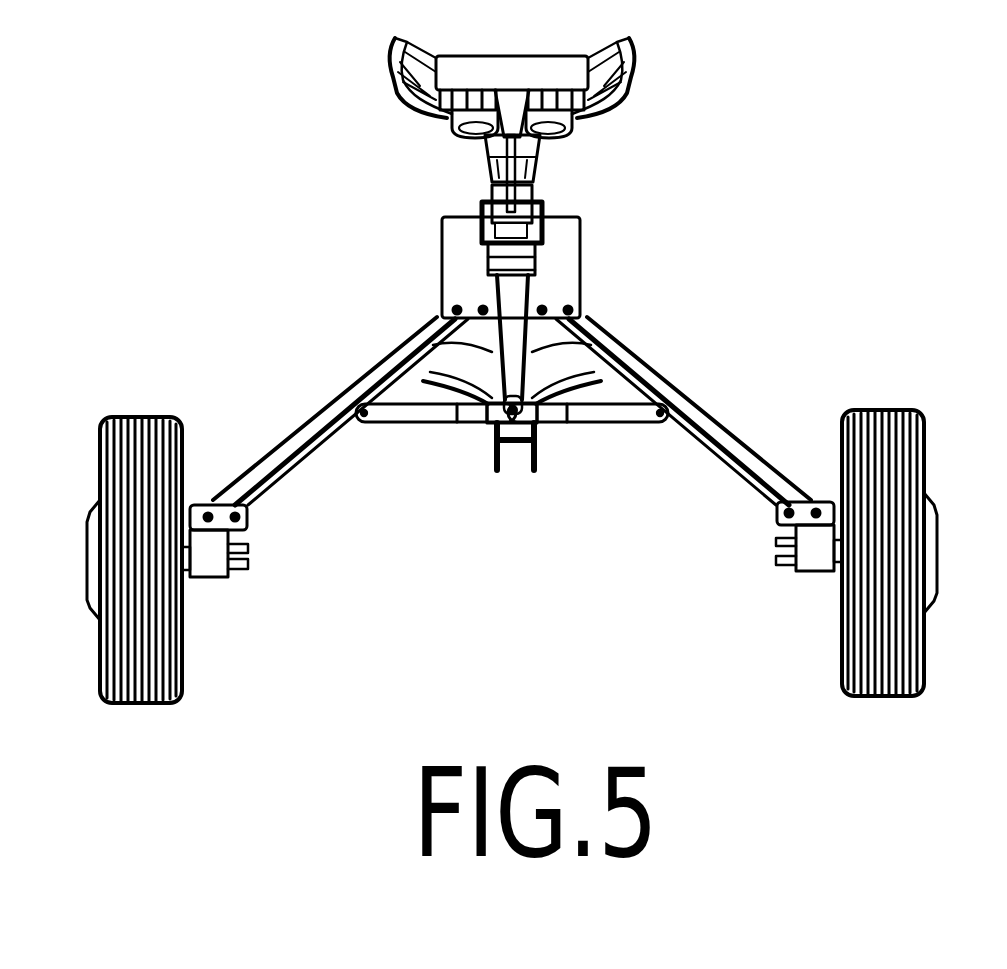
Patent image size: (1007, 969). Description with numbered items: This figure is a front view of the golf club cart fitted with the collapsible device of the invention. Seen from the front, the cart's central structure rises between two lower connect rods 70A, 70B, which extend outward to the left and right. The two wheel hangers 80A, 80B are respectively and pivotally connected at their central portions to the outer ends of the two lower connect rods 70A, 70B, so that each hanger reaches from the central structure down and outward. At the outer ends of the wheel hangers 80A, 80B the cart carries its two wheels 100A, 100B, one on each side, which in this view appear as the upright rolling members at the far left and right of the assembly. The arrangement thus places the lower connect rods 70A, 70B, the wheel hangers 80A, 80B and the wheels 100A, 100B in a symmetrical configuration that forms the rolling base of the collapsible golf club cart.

The lower connect rod 70A is at (412, 410).
The lower connect rod 70B is at (605, 410).
The wheel hanger 80A is at (312, 430).
The wheel hanger 80B is at (637, 362).
The wheel 100A is at (137, 416).
The wheel 100B is at (895, 408).